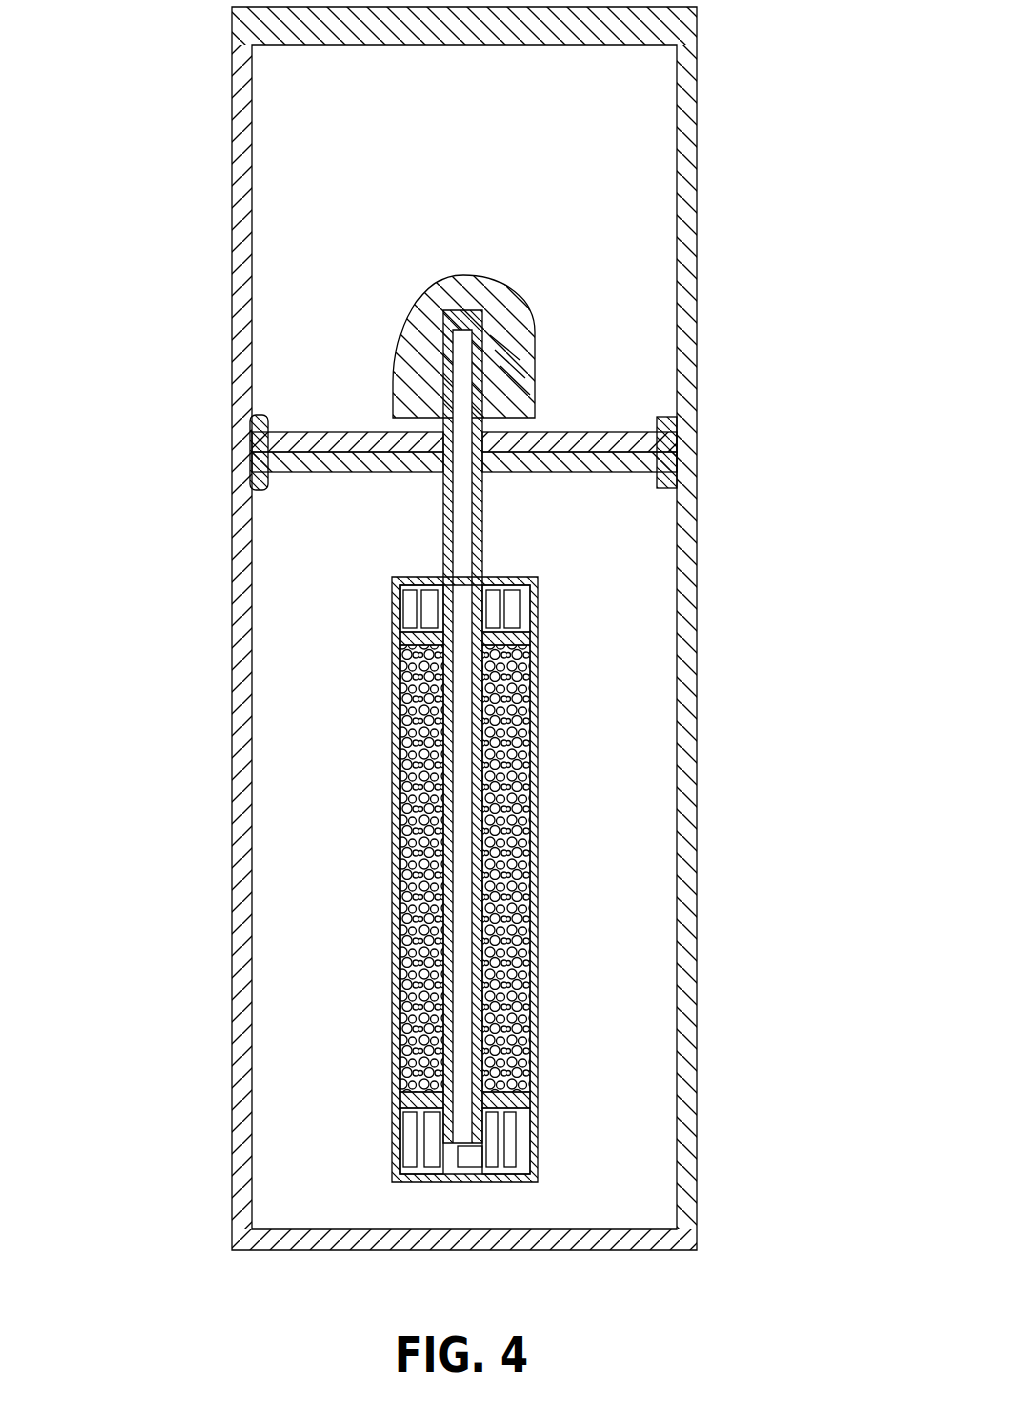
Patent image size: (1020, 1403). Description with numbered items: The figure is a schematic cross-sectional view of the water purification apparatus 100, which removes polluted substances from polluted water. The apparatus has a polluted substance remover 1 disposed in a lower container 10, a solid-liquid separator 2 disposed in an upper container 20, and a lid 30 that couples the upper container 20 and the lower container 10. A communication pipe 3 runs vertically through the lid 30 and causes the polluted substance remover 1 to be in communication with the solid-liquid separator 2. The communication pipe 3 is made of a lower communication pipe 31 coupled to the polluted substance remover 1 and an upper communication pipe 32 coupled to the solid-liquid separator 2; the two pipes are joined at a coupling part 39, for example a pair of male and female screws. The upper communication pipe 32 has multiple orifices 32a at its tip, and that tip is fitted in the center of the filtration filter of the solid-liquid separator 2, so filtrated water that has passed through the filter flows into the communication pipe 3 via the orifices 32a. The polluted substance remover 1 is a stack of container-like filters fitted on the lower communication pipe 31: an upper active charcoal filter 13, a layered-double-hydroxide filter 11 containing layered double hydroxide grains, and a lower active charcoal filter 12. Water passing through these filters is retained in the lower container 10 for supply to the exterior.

The water purification apparatus 100 is at (122, 35).
The polluted substance remover 1 is at (435, 857).
The solid-liquid separator 2 is at (470, 295).
The communication pipe 3 is at (465, 726).
The lower container 10 is at (698, 970).
The layered-double-hydroxide filter 11 is at (538, 845).
The lower active charcoal filter 12 is at (538, 1125).
The upper active charcoal filter 13 is at (392, 602).
The upper container 20 is at (697, 160).
The lid 30 is at (603, 462).
The lower communication pipe 31 is at (392, 960).
The upper communication pipe 32 is at (395, 378).
The orifices 32a is at (490, 366).
The coupling part 39 is at (482, 510).